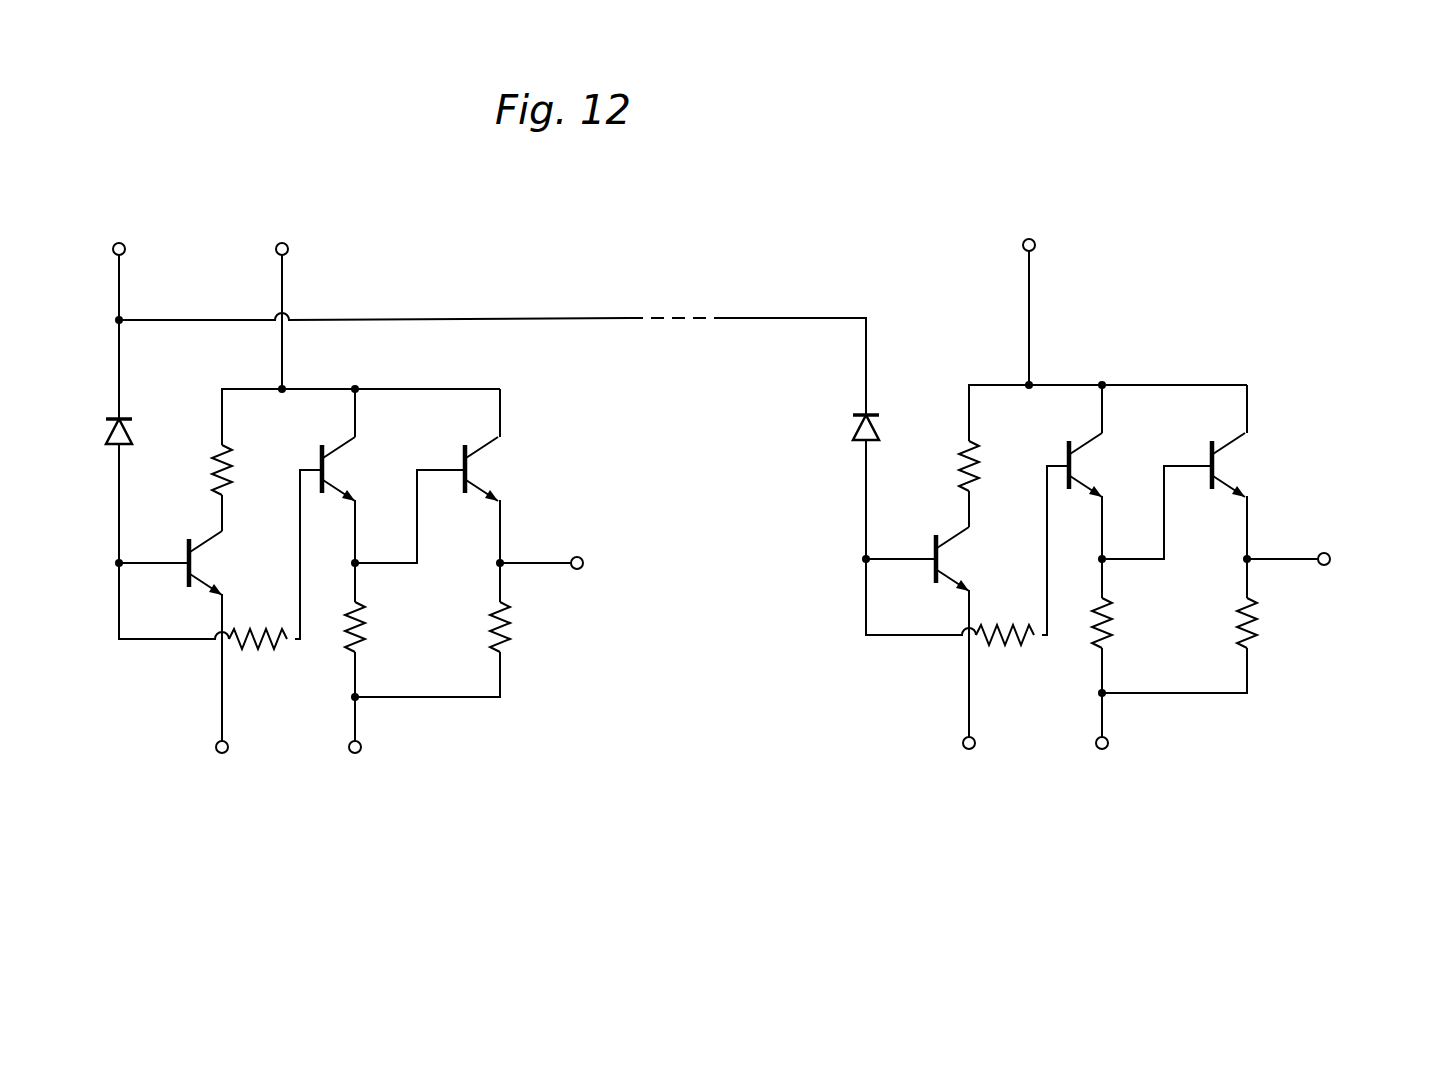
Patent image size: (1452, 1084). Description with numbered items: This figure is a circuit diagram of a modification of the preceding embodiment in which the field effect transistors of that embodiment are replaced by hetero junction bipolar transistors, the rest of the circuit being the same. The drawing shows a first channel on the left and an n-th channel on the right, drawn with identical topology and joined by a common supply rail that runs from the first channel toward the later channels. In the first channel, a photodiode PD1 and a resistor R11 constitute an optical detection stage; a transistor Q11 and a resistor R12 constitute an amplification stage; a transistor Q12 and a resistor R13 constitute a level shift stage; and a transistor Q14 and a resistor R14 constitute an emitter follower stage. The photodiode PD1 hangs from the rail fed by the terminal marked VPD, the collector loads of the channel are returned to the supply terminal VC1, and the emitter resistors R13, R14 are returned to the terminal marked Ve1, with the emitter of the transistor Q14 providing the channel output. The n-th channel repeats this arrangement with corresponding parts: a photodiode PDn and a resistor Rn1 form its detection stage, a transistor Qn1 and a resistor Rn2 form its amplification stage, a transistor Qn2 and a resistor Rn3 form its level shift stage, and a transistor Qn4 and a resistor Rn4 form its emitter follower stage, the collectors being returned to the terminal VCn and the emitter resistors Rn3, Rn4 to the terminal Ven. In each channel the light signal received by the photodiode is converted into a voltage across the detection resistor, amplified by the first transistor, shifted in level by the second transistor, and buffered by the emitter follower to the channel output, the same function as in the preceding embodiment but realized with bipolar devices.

The photodiode bias voltage terminal VPD is at (121, 236).
The collector supply voltage terminal of first stage VC1 is at (284, 236).
The photodiode PD1 is at (141, 435).
The resistor R12 is at (240, 470).
The transistor Q11 is at (217, 563).
The resistor R11 is at (258, 625).
The transistor Q12 is at (347, 469).
The transistor Q14 is at (492, 469).
The resistor R13 is at (373, 627).
The resistor R14 is at (517, 627).
The emitter supply voltage terminal of first stage Ve1 is at (374, 751).
The collector supply voltage terminal of n-th stage VCn is at (1031, 232).
The photodiode of n-th stage PDn is at (888, 431).
The resistor of n-th stage Rn2 is at (987, 466).
The transistor of n-th stage Qn1 is at (964, 559).
The resistor of n-th stage Rn1 is at (1005, 621).
The transistor of n-th stage Qn2 is at (1094, 465).
The output transistor of n-th stage Qn4 is at (1239, 465).
The emitter resistor of n-th stage Rn3 is at (1120, 623).
The emitter resistor of n-th stage Rn4 is at (1264, 623).
The emitter supply voltage terminal of n-th stage Ven is at (1121, 747).